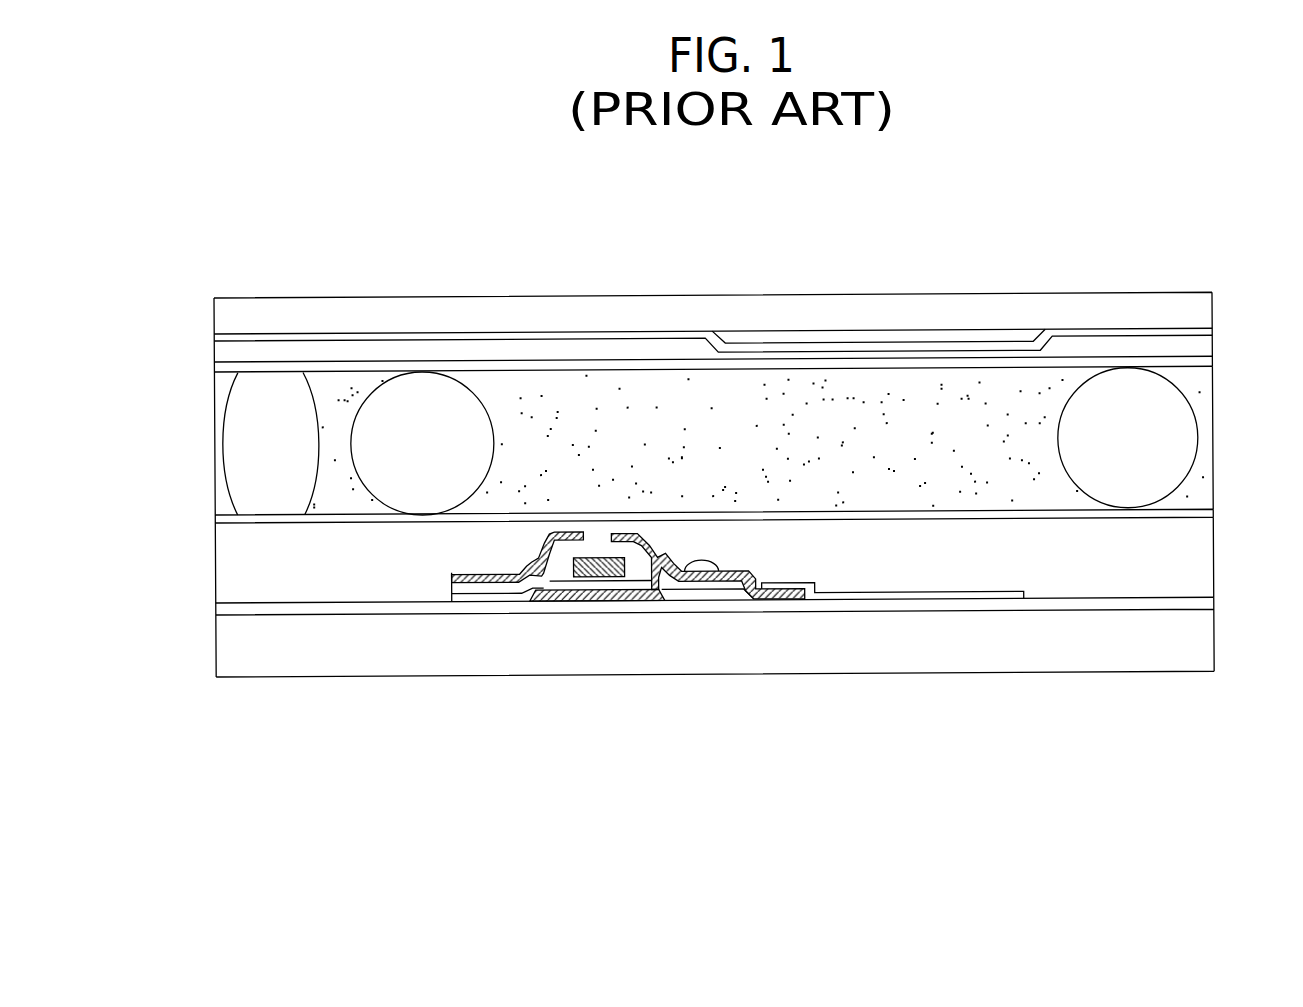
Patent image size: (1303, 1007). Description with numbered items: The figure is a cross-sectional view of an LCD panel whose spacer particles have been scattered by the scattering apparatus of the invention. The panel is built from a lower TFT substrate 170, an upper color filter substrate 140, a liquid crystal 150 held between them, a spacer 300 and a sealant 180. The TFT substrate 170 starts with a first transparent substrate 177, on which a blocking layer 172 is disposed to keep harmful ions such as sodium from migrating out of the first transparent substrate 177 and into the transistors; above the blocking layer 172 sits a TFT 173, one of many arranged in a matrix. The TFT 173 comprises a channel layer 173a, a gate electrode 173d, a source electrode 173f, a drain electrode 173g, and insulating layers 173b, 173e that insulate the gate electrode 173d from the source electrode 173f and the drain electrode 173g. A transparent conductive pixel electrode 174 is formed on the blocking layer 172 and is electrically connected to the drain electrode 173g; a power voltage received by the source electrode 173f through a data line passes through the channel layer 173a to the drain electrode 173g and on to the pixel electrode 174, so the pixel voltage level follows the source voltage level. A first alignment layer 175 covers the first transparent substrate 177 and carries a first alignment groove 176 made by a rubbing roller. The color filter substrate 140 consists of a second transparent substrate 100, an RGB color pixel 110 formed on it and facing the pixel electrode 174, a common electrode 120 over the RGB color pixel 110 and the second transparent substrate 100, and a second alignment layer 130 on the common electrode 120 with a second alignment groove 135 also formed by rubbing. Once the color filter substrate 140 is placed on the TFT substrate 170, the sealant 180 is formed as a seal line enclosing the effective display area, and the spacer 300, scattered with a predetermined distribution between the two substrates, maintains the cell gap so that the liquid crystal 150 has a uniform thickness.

The second transparent substrate 100 is at (914, 299).
The RGB color pixel 110 is at (972, 336).
The common electrode 120 is at (1047, 345).
The second alignment layer 130 is at (1095, 358).
The second alignment groove 135 is at (1171, 372).
The color filter substrate 140 is at (1175, 208).
The liquid crystal 150 is at (600, 396).
The TFT substrate 170 is at (1078, 730).
The blocking layer 172 is at (1208, 606).
The TFT 173 is at (815, 752).
The channel layer 173a is at (558, 602).
The insulating layer 173b is at (479, 597).
The gate electrode 173d is at (609, 578).
The insulating layer 173e is at (700, 591).
The source electrode 173f is at (468, 572).
The drain electrode 173g is at (732, 576).
The pixel electrode 174 is at (900, 598).
The first alignment layer 175 is at (1205, 559).
The first alignment groove 176 is at (1205, 516).
The first transparent substrate 177 is at (1200, 657).
The sealant 180 is at (242, 430).
The spacer 300 is at (1183, 446).